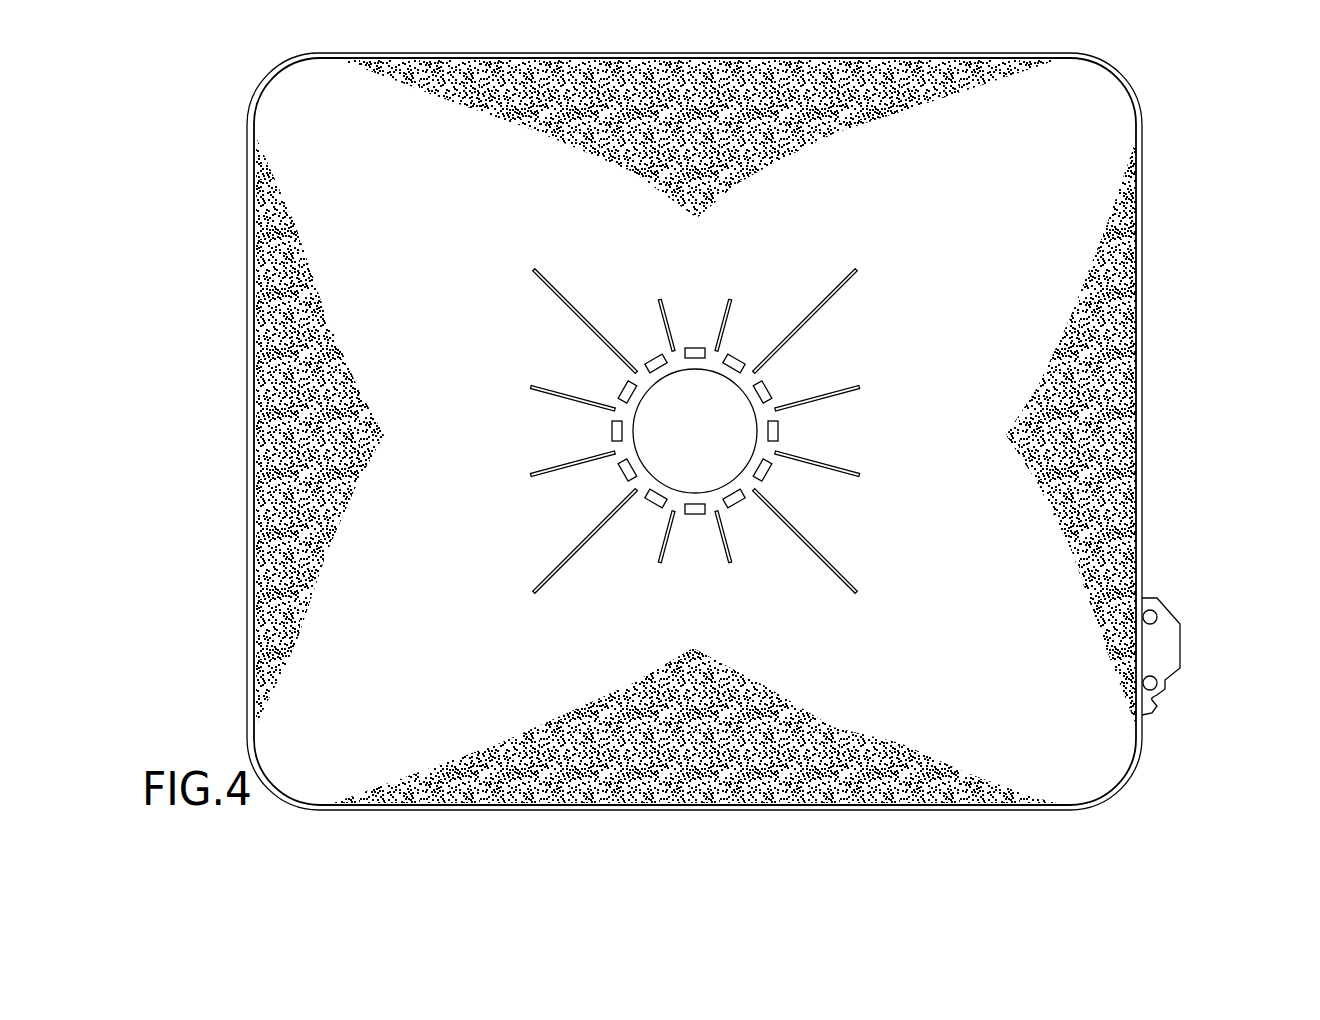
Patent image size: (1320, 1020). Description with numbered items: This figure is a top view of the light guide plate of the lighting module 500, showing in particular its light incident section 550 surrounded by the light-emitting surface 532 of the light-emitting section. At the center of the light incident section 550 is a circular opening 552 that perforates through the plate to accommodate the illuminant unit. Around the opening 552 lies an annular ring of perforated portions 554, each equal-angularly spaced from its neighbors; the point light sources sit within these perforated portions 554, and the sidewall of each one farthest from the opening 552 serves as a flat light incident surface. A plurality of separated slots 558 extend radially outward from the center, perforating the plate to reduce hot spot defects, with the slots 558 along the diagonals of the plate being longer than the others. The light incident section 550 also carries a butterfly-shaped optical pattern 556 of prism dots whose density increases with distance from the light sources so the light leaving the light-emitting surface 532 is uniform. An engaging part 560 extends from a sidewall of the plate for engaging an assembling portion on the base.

The lighting module 500 is at (192, 111).
The light-emitting surface 532 is at (1098, 800).
The light incident section 550 is at (1092, 755).
The opening 552 is at (688, 396).
The perforated portions 554 is at (765, 472).
The optical pattern 556 is at (1104, 207).
The slots 558 is at (830, 392).
The engaging part 560 is at (1158, 651).